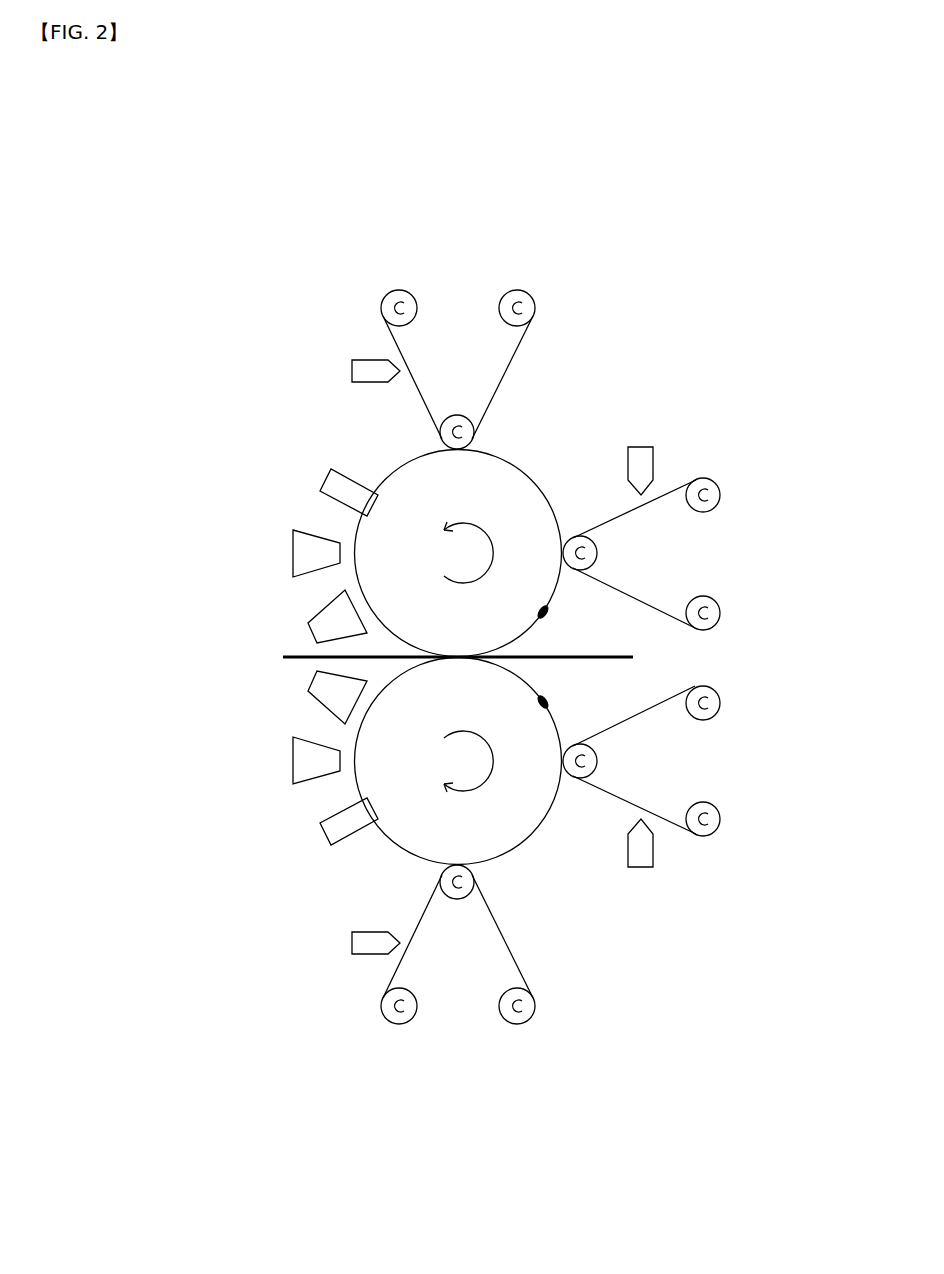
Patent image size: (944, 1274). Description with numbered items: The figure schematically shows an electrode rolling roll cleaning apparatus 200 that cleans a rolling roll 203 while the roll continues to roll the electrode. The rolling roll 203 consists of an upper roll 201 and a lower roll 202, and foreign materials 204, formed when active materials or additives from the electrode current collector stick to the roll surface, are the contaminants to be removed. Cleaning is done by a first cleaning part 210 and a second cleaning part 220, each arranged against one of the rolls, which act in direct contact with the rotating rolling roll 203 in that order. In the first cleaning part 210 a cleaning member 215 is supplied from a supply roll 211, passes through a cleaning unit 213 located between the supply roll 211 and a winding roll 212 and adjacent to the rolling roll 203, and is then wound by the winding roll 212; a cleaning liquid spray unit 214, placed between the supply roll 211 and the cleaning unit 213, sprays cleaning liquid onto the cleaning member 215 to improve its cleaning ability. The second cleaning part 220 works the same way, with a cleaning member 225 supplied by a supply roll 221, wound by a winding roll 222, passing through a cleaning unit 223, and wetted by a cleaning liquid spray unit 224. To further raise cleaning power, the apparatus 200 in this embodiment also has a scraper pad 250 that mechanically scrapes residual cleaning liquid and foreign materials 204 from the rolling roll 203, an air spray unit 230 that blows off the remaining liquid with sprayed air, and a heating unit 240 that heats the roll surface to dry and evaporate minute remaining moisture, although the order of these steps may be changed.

The electrode rolling roll cleaning apparatus 200 is at (187, 222).
The upper roll 201 is at (407, 478).
The lower roll 202 is at (405, 835).
The rolling roll 203 is at (178, 412).
The foreign materials 204 is at (553, 613).
The first cleaning part 210 is at (826, 440).
The supply roll 211 is at (720, 490).
The winding roll 212 is at (720, 619).
The cleaning unit 213 is at (598, 553).
The cleaning liquid spray unit 214 is at (647, 465).
The cleaning member 215 is at (615, 510).
The second cleaning part 220 is at (280, 227).
The supply roll 221 is at (385, 295).
The winding roll 222 is at (530, 297).
The cleaning unit 223 is at (470, 410).
The cleaning liquid spray unit 224 is at (368, 357).
The cleaning member 225 is at (457, 413).
The air spray unit 230 is at (297, 553).
The heating unit 240 is at (312, 627).
The scraper pad 250 is at (323, 483).